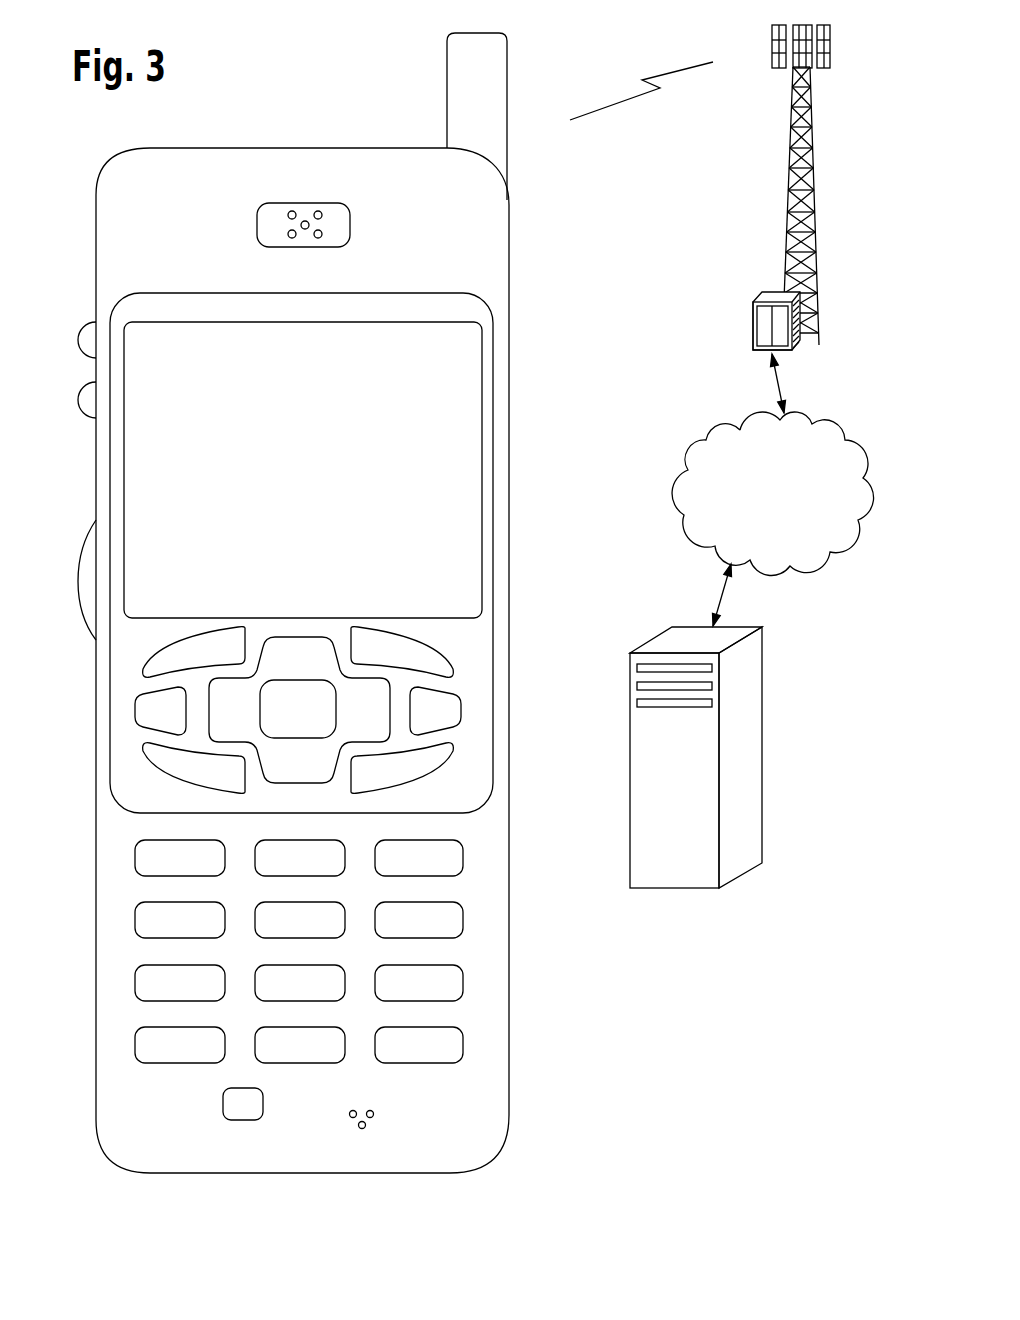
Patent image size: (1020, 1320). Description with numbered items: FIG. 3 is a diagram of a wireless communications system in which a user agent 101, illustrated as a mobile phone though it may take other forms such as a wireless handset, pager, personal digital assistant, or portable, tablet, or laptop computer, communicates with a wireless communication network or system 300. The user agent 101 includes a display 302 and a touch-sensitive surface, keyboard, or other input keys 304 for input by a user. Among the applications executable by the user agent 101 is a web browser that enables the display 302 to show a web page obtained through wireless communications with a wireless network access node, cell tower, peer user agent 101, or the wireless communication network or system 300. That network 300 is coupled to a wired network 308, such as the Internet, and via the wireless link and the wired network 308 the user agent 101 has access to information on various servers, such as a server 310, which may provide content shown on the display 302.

The user agent 101 is at (329, 619).
The wireless communication network or system 300 is at (787, 203).
The display 302 is at (484, 331).
The input keys 304 is at (513, 628).
The wired network 308 is at (697, 542).
The server 310 is at (674, 888).